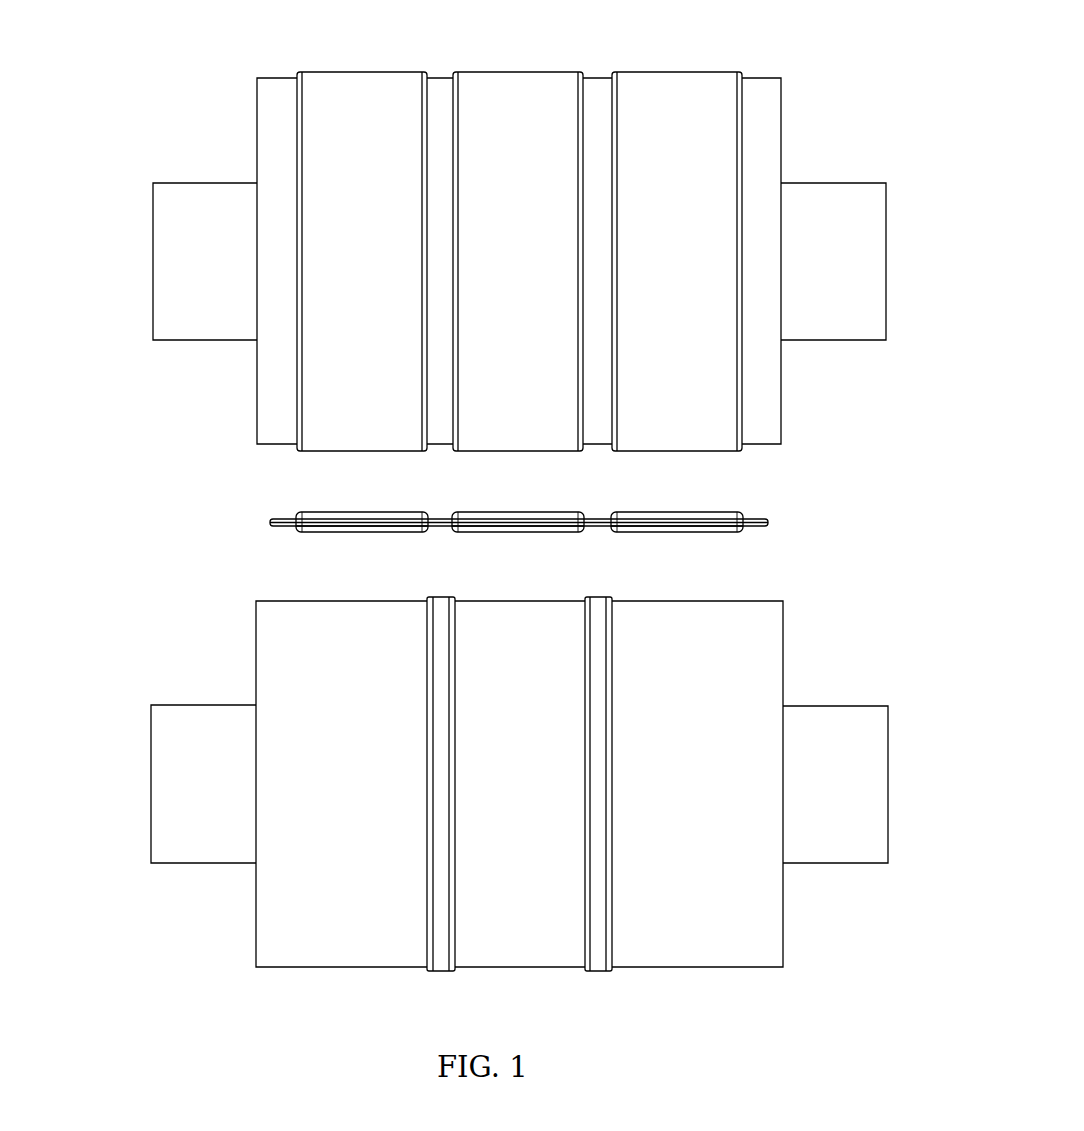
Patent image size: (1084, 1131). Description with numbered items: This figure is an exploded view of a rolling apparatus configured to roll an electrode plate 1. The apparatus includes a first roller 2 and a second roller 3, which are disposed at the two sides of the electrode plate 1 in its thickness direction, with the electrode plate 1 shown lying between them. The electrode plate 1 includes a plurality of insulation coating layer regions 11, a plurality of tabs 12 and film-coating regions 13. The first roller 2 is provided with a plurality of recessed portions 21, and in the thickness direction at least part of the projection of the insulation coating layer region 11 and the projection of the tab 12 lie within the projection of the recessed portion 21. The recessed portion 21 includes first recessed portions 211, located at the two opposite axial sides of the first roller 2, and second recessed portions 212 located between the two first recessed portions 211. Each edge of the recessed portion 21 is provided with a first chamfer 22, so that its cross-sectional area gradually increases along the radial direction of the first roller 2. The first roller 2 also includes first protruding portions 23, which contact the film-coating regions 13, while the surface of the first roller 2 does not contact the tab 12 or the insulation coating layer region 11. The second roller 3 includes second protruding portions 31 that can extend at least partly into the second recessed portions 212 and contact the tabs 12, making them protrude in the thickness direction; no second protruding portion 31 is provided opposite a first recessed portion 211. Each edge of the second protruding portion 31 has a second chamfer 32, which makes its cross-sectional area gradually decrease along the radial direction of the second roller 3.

The electrode plate 1 is at (272, 557).
The insulation coating layer region 11 is at (742, 515).
The tab 12 is at (755, 526).
The film-coating region 13 is at (720, 532).
The first roller 2 is at (218, 128).
The recessed portion 21 is at (838, 18).
The first recessed portion 211 is at (277, 107).
The second recessed portion 212 is at (440, 95).
The first chamfer 22 is at (612, 80).
The first protruding portion 23 is at (367, 100).
The second roller 3 is at (323, 930).
The second protruding portion 31 is at (442, 966).
The second chamfer 32 is at (430, 968).